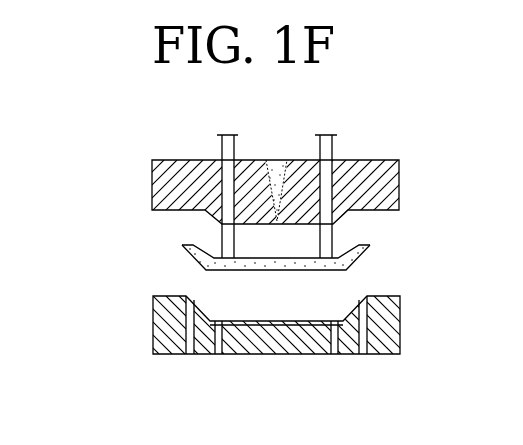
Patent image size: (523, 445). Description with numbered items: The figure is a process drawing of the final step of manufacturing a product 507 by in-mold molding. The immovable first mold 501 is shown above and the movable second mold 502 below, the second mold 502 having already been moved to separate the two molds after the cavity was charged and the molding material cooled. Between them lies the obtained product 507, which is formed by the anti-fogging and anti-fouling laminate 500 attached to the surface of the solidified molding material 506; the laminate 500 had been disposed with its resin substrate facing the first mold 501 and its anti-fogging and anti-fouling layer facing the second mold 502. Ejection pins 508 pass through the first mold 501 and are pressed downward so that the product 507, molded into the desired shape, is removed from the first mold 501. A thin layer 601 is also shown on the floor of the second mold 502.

The first mold 501 is at (374, 164).
The second mold 502 is at (390, 355).
The anti-fogging and anti-fouling laminate 500 is at (196, 264).
The molten molding material 506 is at (186, 247).
The product 507 is at (102, 232).
The ejection pins 508 is at (339, 242).
The release layer 601 is at (284, 320).